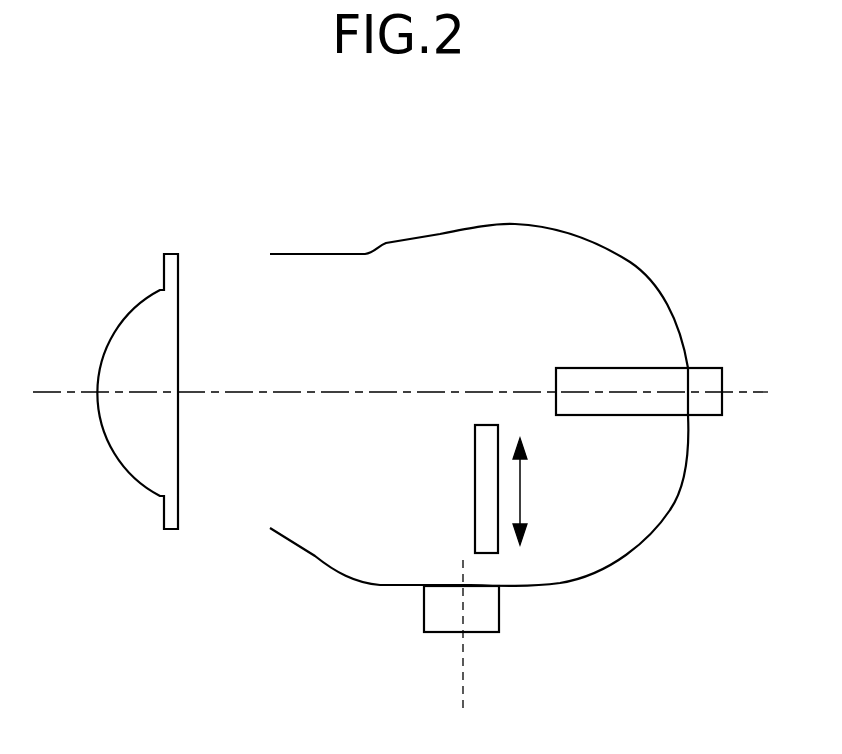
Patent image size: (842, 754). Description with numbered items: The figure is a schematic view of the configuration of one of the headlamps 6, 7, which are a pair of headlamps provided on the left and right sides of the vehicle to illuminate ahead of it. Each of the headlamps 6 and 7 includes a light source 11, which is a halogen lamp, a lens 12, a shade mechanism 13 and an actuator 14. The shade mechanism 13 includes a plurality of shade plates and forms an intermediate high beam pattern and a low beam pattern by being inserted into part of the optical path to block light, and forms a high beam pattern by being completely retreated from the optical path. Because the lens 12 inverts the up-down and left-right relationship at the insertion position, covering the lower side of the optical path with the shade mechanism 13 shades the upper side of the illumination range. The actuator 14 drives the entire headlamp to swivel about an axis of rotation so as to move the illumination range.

The headlamp 6 is at (409, 349).
The headlamp 7 is at (479, 405).
The light source 11 is at (636, 378).
The lens 12 is at (142, 322).
The shade mechanism 13 is at (480, 508).
The actuator 14 is at (487, 613).